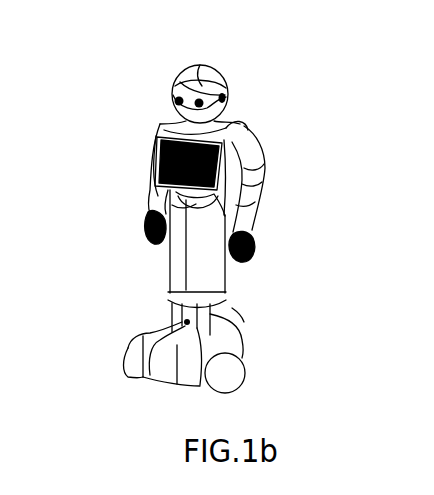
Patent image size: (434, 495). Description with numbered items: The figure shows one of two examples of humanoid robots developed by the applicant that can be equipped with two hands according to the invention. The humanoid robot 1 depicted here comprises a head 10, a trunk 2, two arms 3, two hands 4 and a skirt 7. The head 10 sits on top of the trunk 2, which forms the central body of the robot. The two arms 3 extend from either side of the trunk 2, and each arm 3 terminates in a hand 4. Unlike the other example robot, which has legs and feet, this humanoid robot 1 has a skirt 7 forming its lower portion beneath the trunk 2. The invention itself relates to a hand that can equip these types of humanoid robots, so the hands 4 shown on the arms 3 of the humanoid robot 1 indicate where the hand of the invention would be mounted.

The humanoid robot 1 is at (129, 63).
The head 10 is at (222, 72).
The trunk 2 is at (230, 124).
The arms 3 is at (262, 161).
The hands 4 is at (254, 237).
The skirt 7 is at (226, 302).